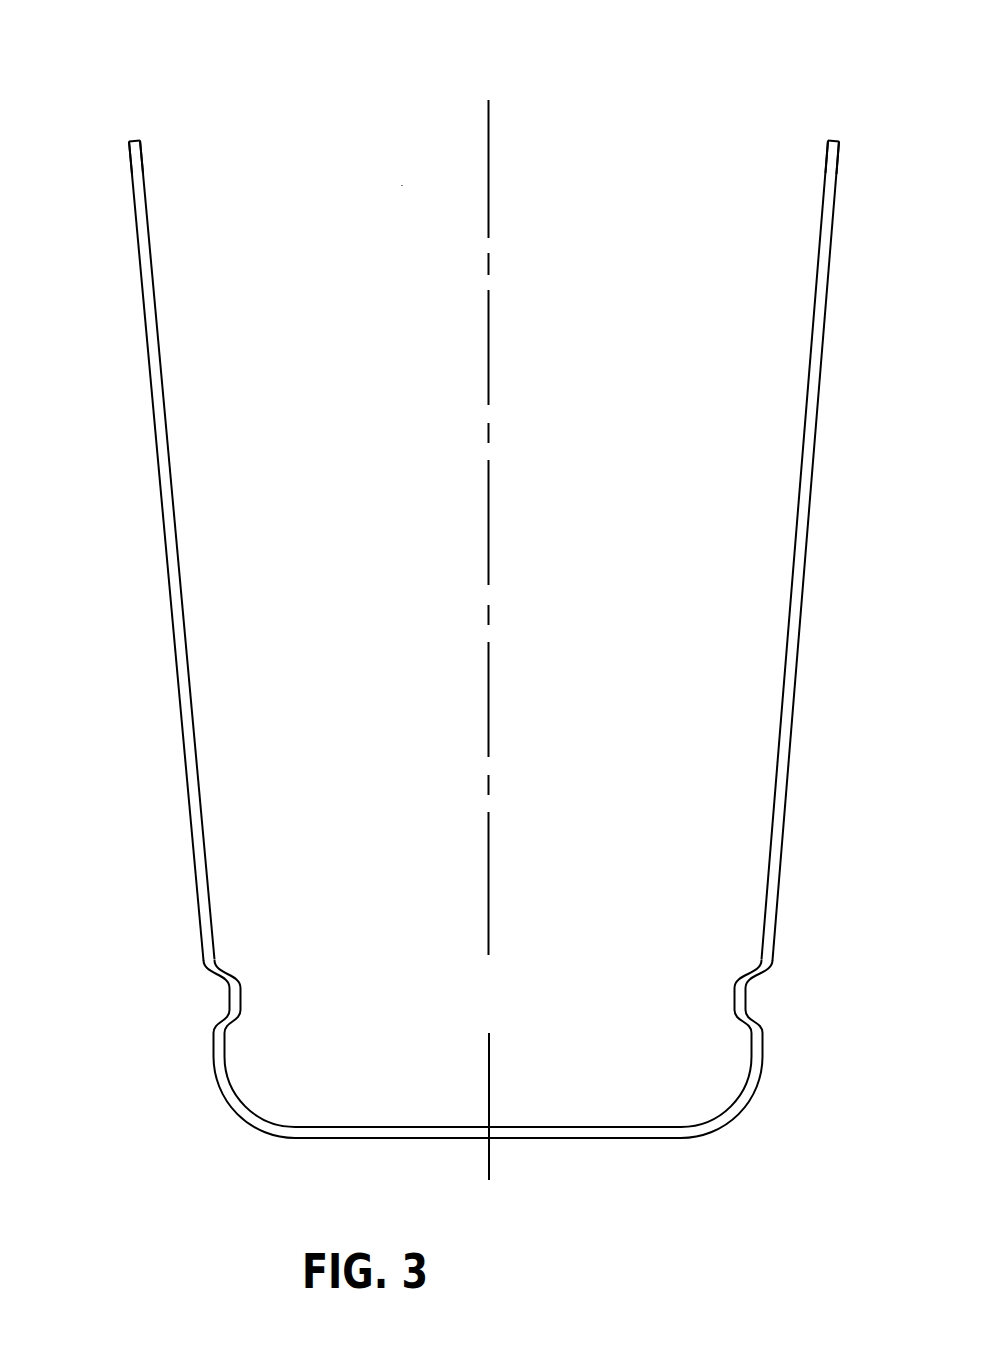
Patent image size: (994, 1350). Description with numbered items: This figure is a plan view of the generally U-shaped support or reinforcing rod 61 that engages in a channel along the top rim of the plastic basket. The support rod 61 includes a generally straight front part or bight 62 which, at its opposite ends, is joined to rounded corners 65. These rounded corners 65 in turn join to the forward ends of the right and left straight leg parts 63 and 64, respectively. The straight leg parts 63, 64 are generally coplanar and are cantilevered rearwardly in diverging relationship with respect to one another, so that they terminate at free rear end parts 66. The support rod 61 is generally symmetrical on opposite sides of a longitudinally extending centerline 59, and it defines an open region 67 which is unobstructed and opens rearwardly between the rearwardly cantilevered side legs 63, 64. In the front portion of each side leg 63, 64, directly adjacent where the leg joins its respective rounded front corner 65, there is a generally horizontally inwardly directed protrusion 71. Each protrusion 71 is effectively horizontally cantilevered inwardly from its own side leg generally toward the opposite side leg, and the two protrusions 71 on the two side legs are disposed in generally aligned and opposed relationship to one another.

The centerline 59 is at (488, 362).
The support rod 61 is at (150, 583).
The bight 62 is at (488, 1054).
The right straight leg part 63 is at (163, 462).
The left straight leg part 64 is at (800, 539).
The rounded corners 65 is at (238, 1077).
The free rear end parts 66 is at (138, 173).
The open region 67 is at (402, 185).
The protrusion 71 is at (235, 1000).